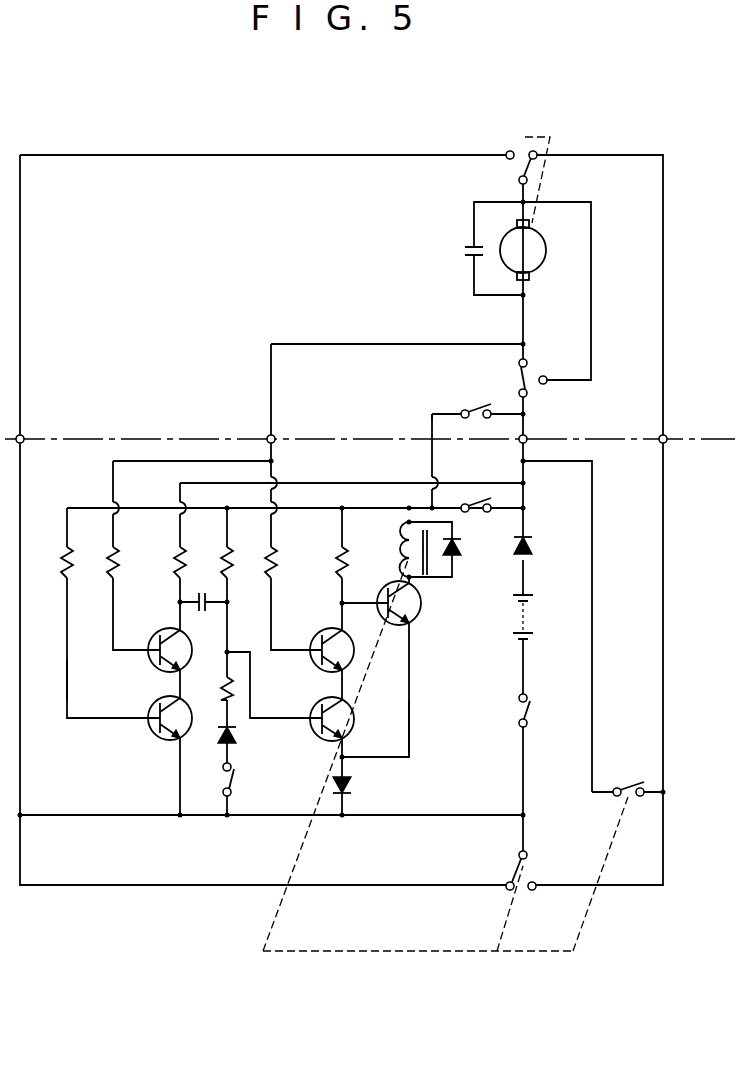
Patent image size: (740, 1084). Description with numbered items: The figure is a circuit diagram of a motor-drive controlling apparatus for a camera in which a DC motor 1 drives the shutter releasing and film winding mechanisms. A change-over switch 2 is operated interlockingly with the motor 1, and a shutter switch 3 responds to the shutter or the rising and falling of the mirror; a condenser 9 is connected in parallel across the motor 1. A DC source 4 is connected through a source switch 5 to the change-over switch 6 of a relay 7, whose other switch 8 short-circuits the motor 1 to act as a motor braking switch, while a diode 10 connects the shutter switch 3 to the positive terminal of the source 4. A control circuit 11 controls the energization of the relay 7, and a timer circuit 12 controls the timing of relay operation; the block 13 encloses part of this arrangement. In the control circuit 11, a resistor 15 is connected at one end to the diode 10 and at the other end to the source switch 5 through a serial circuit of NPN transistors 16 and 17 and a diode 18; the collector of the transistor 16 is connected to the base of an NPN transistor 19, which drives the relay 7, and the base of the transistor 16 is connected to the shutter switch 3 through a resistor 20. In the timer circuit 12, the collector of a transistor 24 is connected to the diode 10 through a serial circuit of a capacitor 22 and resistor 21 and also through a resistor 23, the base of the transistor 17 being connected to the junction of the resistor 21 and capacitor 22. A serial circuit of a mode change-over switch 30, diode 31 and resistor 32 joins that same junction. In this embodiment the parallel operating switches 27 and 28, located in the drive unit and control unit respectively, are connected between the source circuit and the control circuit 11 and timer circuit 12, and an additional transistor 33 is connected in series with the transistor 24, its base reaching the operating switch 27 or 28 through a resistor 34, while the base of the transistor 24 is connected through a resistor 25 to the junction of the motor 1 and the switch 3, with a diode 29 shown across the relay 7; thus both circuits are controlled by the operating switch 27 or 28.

The motor 1 is at (547, 250).
The change-over switch 2 is at (514, 142).
The shutter switch 3 is at (533, 372).
The DC source 4 is at (528, 612).
The source switch 5 is at (530, 712).
The change-over switch 6 is at (537, 876).
The relay 7 is at (402, 540).
The switch 8 is at (628, 777).
The condenser 9 is at (463, 251).
The diode 10 is at (532, 546).
The control circuit 11 is at (442, 739).
The timer circuit 12 is at (84, 699).
The circuit block 13 is at (461, 474).
The resistor 15 is at (347, 558).
The NPN transistor 16 is at (355, 668).
The NPN transistor 17 is at (355, 727).
The diode 18 is at (352, 784).
The NPN transistor 19 is at (422, 604).
The resistor 20 is at (276, 558).
The resistor 21 is at (232, 558).
The capacitor 22 is at (210, 606).
The resistor 23 is at (185, 558).
The transistor 24 is at (148, 664).
The resistor 25 is at (118, 558).
The operating switch 27 is at (472, 404).
The operating switch 28 is at (480, 513).
The diode 29 is at (461, 546).
The mode change-over switch 30 is at (238, 781).
The diode 31 is at (236, 736).
The resistor 32 is at (222, 690).
The transistor 33 is at (150, 734).
The resistor 34 is at (58, 558).